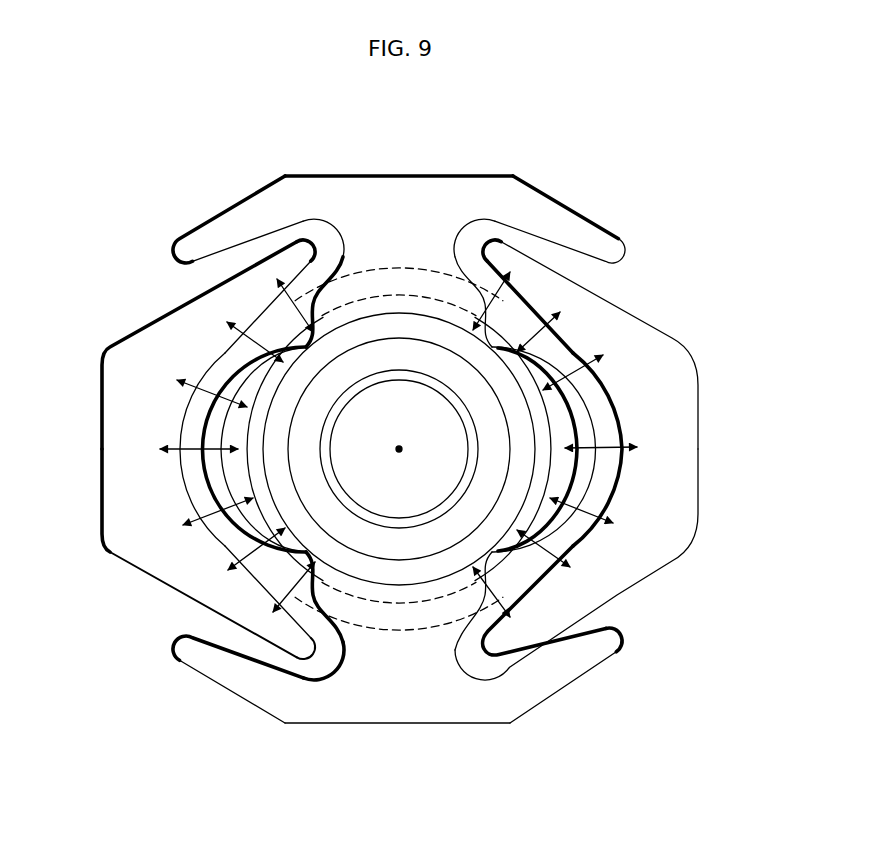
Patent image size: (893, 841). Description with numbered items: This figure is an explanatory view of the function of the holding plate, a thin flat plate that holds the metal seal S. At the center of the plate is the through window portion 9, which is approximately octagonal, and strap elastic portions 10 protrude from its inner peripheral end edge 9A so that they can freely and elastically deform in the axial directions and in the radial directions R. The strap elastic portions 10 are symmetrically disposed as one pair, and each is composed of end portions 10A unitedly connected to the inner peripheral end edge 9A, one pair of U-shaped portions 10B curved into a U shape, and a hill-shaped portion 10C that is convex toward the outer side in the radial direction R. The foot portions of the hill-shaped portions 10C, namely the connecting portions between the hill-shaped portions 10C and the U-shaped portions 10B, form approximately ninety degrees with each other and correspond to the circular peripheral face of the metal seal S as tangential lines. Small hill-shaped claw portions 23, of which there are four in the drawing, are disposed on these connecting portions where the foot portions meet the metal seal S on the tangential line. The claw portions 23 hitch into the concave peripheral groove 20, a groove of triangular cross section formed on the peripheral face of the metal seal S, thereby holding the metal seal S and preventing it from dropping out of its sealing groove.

The through window portion 9 is at (698, 445).
The inner peripheral end edge 9A is at (575, 217).
The strap elastic portion 10 is at (215, 539).
The end portion 10A is at (210, 270).
The U-shaped portion 10B is at (305, 227).
The hill-shaped portion 10C is at (183, 427).
The concave peripheral groove 20 is at (417, 590).
The claw portion 23 is at (307, 547).
The metal seal S is at (399, 292).
The radial direction R is at (397, 444).